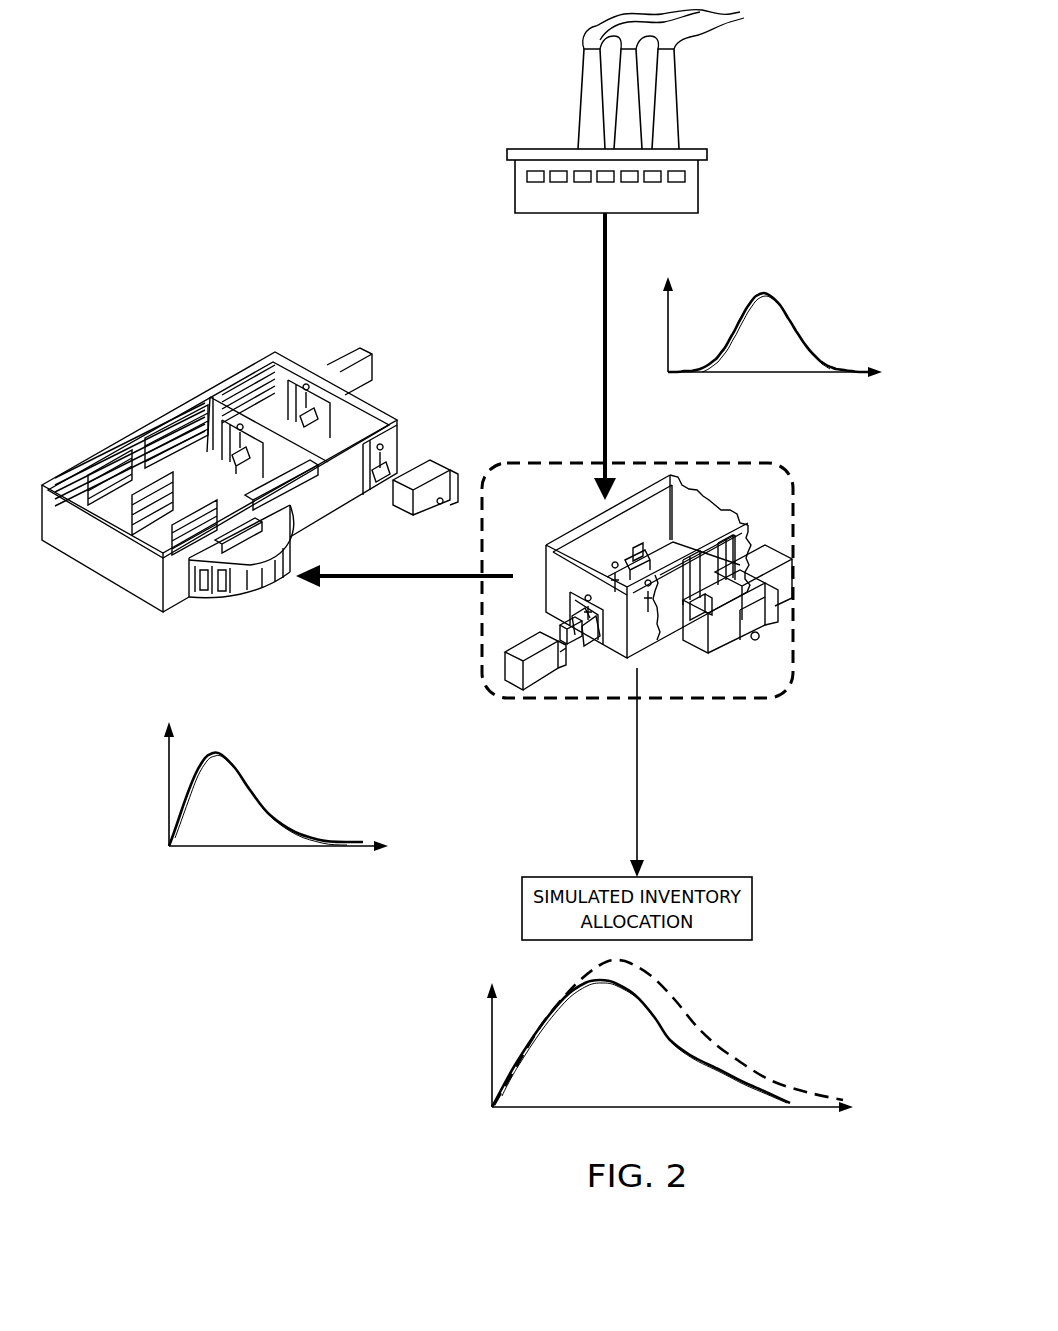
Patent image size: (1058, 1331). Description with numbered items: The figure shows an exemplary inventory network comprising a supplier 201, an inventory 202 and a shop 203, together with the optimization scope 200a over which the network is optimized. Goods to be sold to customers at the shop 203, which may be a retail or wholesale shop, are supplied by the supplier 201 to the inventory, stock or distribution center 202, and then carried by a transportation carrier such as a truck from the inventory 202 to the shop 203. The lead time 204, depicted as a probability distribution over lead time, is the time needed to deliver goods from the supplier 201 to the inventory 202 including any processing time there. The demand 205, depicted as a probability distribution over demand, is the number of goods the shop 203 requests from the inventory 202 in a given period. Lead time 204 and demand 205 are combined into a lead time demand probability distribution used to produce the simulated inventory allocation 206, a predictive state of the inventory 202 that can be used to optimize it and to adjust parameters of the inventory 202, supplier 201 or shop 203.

The optimization scope 200a is at (288, 238).
The supplier 201 is at (533, 148).
The inventory 202 is at (755, 710).
The shop 203 is at (158, 420).
The lead time 204 is at (816, 292).
The demand 205 is at (320, 768).
The simulated inventory allocation 206 is at (778, 1006).